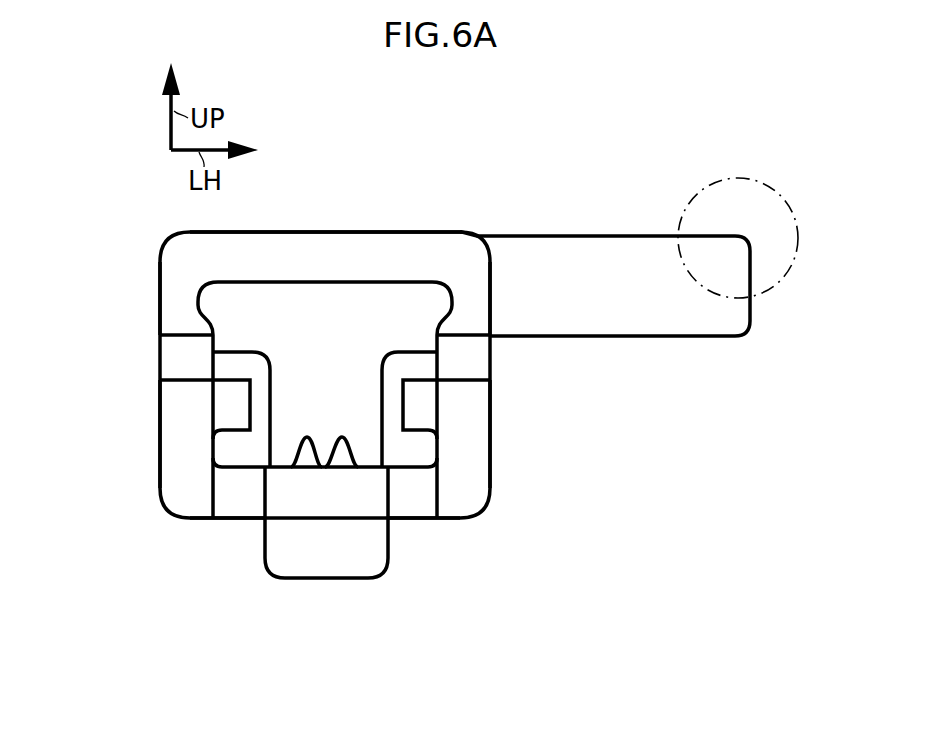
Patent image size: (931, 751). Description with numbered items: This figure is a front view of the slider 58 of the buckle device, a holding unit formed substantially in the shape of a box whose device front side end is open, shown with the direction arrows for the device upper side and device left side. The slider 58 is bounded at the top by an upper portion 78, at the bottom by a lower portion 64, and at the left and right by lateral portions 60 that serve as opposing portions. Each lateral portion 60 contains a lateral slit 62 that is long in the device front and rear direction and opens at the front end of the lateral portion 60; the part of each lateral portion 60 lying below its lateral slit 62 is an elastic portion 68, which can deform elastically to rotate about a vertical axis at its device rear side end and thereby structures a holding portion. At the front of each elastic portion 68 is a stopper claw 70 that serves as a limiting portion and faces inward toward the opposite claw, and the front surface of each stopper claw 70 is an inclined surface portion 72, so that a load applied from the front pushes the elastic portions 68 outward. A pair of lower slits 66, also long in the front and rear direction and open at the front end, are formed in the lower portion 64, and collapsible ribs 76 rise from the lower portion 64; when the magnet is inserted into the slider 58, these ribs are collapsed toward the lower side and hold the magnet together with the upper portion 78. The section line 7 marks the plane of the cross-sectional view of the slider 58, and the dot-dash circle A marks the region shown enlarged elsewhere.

The slider 58 is at (457, 201).
The upper portion 78 is at (333, 232).
The lateral portion 60 is at (160, 290).
The lateral slit 62 is at (190, 336).
The stopper claw 70 is at (250, 392).
The inclined surface portion 72 is at (234, 410).
The elastic portion 68 is at (160, 442).
The lower slit 66 is at (215, 488).
The lower portion 64 is at (282, 465).
The collapsible ribs 76 is at (344, 439).
The section line 7 is at (150, 358).
The detail region A is at (758, 182).